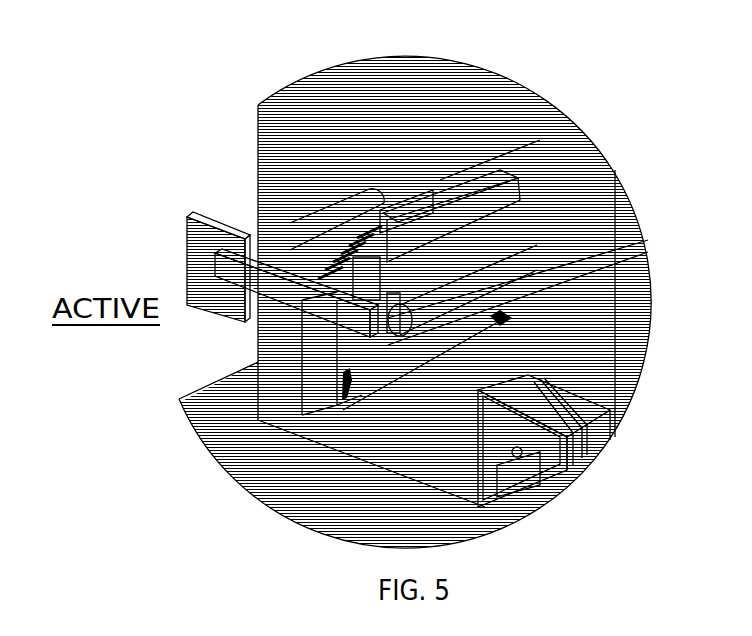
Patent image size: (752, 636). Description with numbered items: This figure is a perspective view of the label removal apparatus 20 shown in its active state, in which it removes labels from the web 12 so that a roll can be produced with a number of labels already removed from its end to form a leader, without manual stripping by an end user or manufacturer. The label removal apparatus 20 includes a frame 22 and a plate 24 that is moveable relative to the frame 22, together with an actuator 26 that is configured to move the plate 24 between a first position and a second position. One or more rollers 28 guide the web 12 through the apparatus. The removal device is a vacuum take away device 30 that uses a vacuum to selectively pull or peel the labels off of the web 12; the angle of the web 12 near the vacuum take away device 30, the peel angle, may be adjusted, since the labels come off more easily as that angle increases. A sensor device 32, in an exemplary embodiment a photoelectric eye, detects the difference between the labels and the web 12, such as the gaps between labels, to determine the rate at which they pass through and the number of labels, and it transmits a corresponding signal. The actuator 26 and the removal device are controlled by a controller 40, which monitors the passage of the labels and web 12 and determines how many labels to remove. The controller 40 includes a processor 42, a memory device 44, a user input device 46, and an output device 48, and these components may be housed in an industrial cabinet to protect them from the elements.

The web 12 is at (613, 268).
The label removal apparatus 20 is at (613, 75).
The frame 22 is at (322, 348).
The plate 24 is at (300, 252).
The actuator 26 is at (352, 373).
The rollers 28 is at (310, 223).
The vacuum take away device 30 is at (518, 178).
The sensor device 32 is at (432, 180).
The controller 40 is at (569, 475).
The processor 42 is at (513, 503).
The memory device 44 is at (508, 522).
The user input device 46 is at (522, 452).
The output device 48 is at (548, 494).